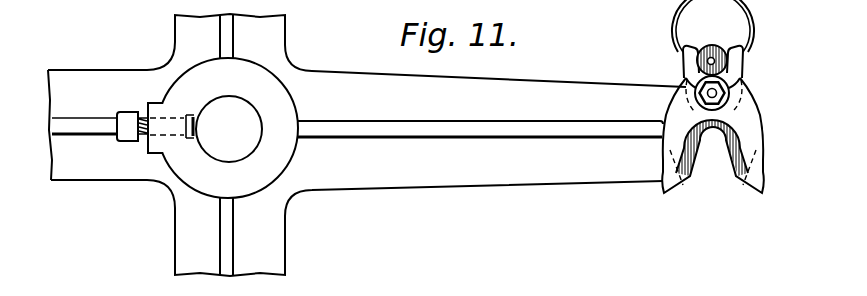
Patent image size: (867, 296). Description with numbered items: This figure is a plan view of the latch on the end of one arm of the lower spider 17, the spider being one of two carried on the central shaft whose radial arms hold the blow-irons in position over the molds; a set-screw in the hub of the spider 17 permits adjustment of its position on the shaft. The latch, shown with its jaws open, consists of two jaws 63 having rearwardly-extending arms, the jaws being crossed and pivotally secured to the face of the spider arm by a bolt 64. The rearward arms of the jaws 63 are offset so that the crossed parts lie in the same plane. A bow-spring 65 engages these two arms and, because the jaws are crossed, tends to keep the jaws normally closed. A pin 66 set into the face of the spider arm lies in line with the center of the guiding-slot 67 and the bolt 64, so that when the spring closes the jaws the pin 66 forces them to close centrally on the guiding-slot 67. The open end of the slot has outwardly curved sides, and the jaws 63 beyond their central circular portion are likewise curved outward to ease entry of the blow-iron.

The spider 17 is at (480, 114).
The jaws 63 is at (675, 146).
The bolt 64 is at (722, 92).
The bow-spring 65 is at (752, 30).
The pin 66 is at (706, 60).
The guiding-slot 67 is at (712, 147).